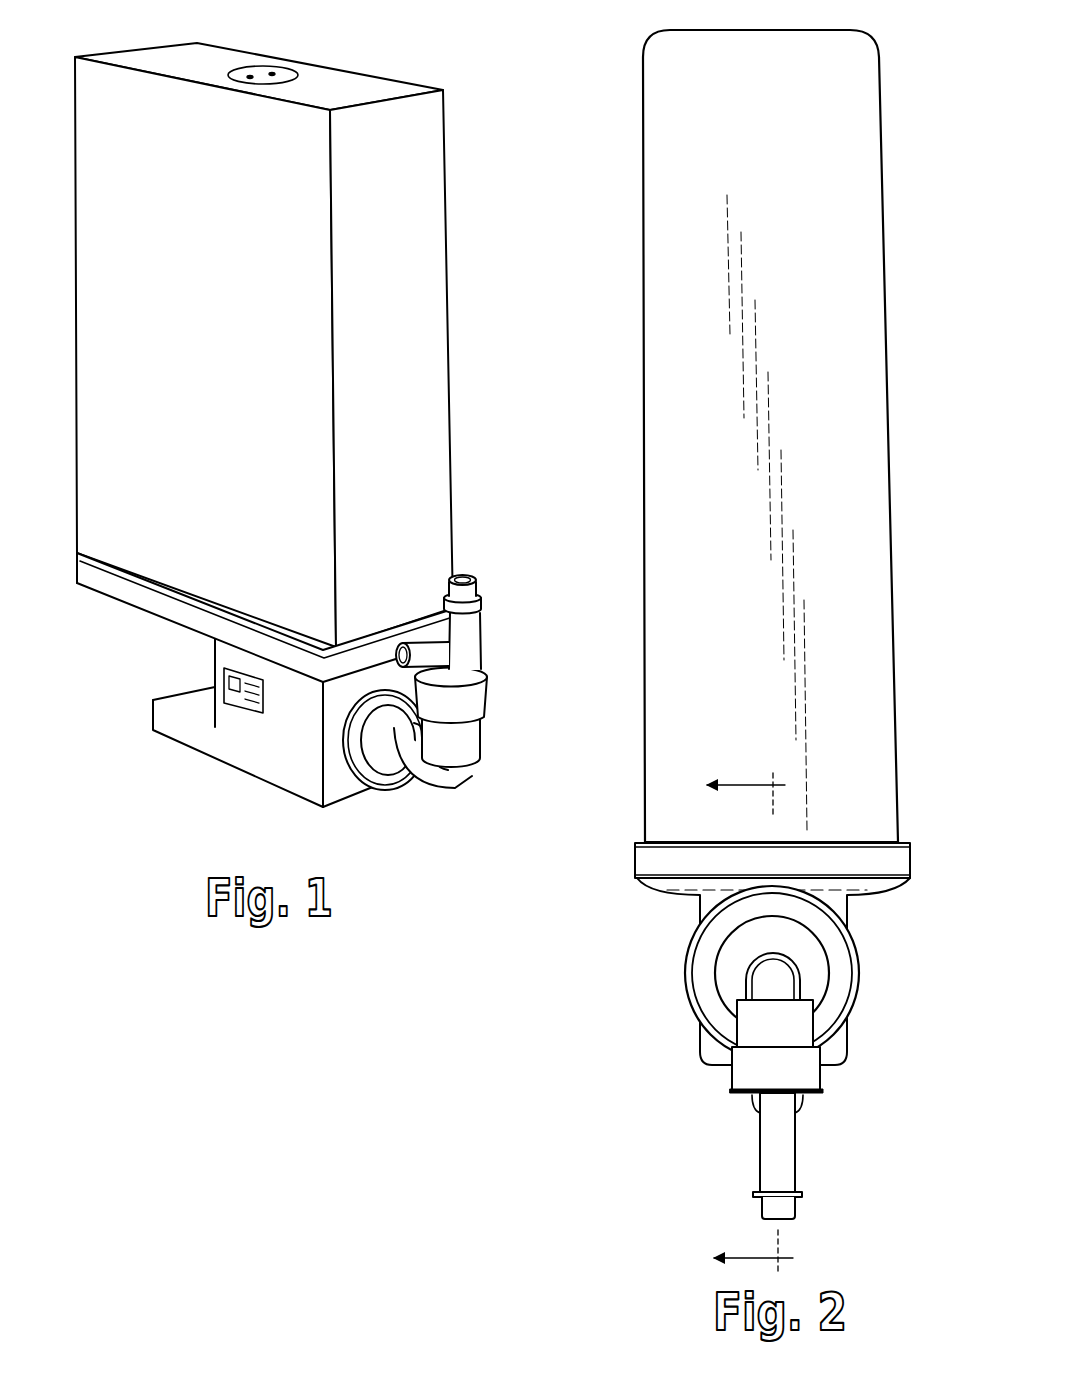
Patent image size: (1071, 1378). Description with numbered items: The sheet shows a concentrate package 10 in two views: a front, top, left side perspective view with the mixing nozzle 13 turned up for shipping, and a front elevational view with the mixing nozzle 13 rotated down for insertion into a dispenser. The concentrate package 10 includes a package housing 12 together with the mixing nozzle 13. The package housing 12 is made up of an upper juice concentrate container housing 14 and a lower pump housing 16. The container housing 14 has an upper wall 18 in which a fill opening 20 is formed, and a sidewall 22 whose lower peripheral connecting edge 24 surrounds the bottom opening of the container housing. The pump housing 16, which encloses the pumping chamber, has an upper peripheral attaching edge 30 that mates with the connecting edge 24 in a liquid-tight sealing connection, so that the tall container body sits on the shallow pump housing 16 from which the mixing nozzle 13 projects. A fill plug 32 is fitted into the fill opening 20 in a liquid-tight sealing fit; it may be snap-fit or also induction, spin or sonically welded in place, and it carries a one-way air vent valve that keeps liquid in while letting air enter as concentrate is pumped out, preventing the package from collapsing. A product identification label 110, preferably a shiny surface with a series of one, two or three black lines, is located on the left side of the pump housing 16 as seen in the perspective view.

In FIG. 1, the concentrate package 10 is at (467, 61).
In FIG. 2, the concentrate package 10 is at (610, 907).
In FIG. 1, the package housing 12 is at (298, 323).
In FIG. 1, the mixing nozzle 13 is at (441, 671).
In FIG. 2, the mixing nozzle 13 is at (776, 1086).
In FIG. 1, the container housing 14 is at (205, 352).
In FIG. 2, the container housing 14 is at (770, 436).
In FIG. 1, the pump housing 16 is at (312, 722).
In FIG. 2, the pump housing 16 is at (700, 902).
In FIG. 1, the upper wall 18 is at (259, 55).
In FIG. 1, the fill opening 20 is at (293, 62).
In FIG. 1, the sidewall 22 is at (457, 506).
In FIG. 1, the lower peripheral connecting edge 24 is at (261, 617).
In FIG. 1, the upper peripheral attaching edge 30 is at (94, 582).
In FIG. 1, the fill plug 32 is at (257, 68).
In FIG. 1, the product identification label 110 is at (228, 712).